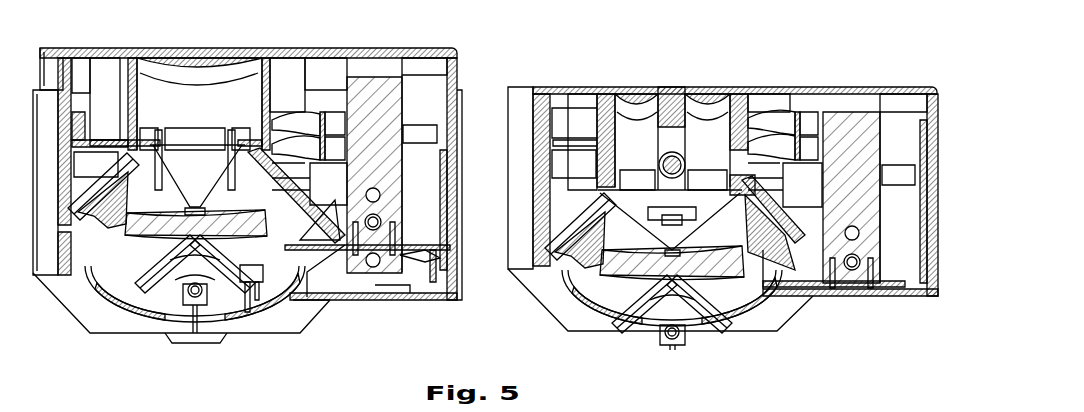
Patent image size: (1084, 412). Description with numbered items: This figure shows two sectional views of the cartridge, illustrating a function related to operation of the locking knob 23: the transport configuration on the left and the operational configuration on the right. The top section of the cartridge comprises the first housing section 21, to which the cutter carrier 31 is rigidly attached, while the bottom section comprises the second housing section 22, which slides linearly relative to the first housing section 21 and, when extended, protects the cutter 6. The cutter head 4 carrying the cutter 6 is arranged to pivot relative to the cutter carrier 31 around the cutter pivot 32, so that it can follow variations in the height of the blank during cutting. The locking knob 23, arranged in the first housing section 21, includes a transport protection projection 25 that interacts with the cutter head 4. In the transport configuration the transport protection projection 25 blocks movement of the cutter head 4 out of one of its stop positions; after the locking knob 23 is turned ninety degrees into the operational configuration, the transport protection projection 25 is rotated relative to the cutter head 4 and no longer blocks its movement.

The cutter head 4 is at (112, 252).
The cutter 6 is at (198, 305).
The first housing section 21 is at (365, 48).
The second housing section 22 is at (423, 299).
The locking knob 23 is at (177, 49).
The transport protection projection 25 is at (214, 189).
The cutter carrier 31 is at (387, 122).
The cutter pivot 32 is at (373, 232).